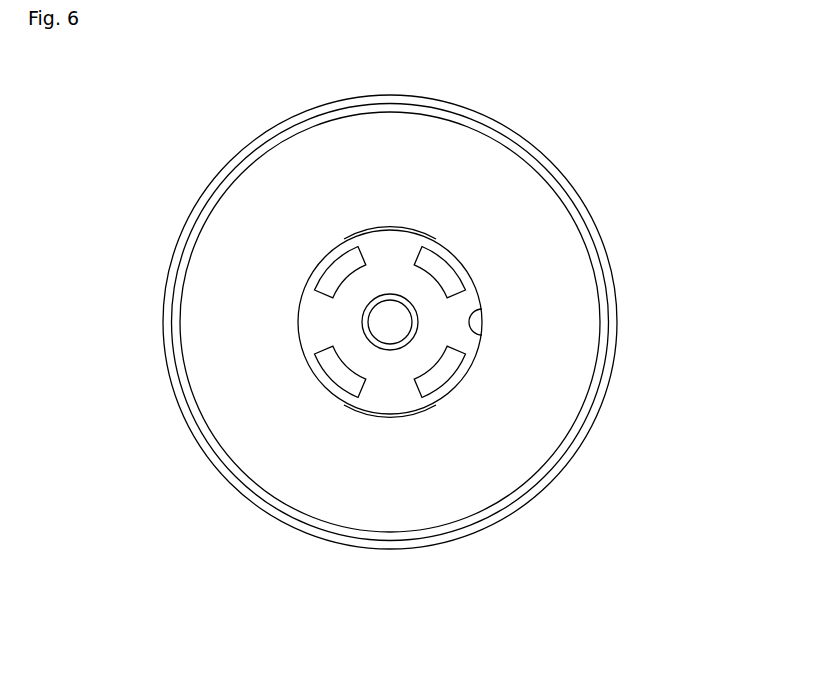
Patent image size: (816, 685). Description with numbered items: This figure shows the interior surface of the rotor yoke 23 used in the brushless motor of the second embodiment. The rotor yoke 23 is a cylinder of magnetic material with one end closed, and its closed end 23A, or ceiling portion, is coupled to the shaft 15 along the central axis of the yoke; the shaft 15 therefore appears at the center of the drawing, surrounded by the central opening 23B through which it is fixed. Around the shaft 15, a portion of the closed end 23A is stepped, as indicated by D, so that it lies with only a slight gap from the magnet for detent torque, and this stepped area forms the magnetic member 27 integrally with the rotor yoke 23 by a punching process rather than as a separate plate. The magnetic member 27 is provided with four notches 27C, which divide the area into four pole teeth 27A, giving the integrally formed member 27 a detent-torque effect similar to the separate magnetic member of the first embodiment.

The rotor yoke 23 is at (666, 270).
The closed end 23A is at (518, 197).
The center hole 23B is at (362, 324).
The magnetic member 27 is at (423, 357).
The pole teeth 27A is at (392, 252).
The notches 27C is at (642, 558).
The shaft 15 is at (392, 322).
The stepped portion D is at (481, 334).